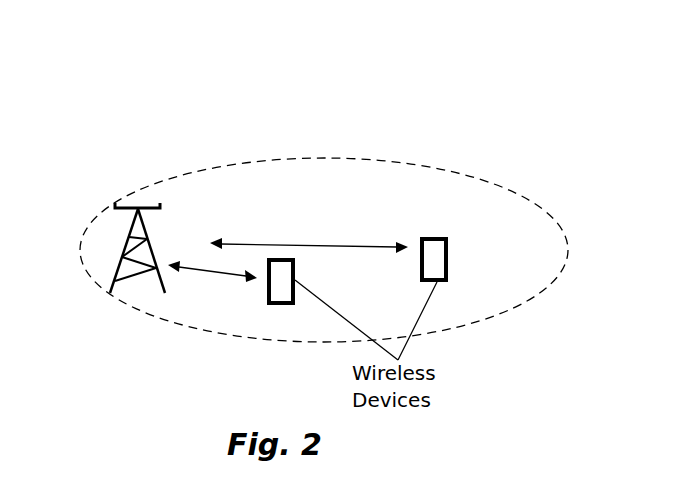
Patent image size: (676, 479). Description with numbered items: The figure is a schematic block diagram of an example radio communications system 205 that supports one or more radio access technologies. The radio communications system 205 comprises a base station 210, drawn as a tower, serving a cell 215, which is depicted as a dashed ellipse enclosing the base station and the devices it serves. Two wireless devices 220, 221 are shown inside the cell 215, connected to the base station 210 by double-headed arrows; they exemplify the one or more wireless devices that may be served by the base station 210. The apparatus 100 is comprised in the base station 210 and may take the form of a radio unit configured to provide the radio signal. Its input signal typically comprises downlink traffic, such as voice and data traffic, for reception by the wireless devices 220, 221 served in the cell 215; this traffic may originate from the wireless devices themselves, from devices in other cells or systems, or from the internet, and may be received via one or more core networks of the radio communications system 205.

The radio communications system 205 is at (163, 75).
The cell 215 is at (248, 158).
The base station 210 is at (199, 246).
The apparatus 100 is at (148, 242).
The wireless device 220 is at (448, 240).
The wireless device 221 is at (267, 302).